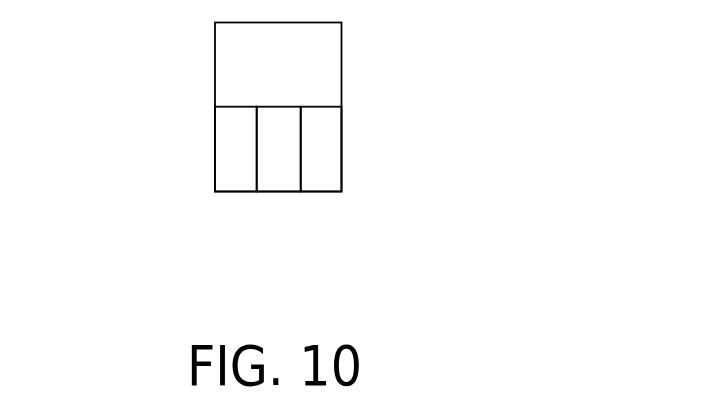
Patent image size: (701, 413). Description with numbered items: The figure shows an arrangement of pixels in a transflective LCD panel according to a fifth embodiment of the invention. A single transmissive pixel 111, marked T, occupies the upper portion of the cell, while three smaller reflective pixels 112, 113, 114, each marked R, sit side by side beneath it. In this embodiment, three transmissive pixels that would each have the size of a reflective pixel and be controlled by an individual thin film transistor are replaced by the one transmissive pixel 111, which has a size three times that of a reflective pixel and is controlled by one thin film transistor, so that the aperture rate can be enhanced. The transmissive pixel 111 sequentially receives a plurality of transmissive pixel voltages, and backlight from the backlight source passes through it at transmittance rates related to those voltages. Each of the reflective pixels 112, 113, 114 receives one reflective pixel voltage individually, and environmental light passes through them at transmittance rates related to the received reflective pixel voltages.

The transmissive pixel 111 is at (342, 64).
The reflective pixel 112 is at (222, 193).
The reflective pixel 113 is at (279, 193).
The reflective pixel 114 is at (337, 193).